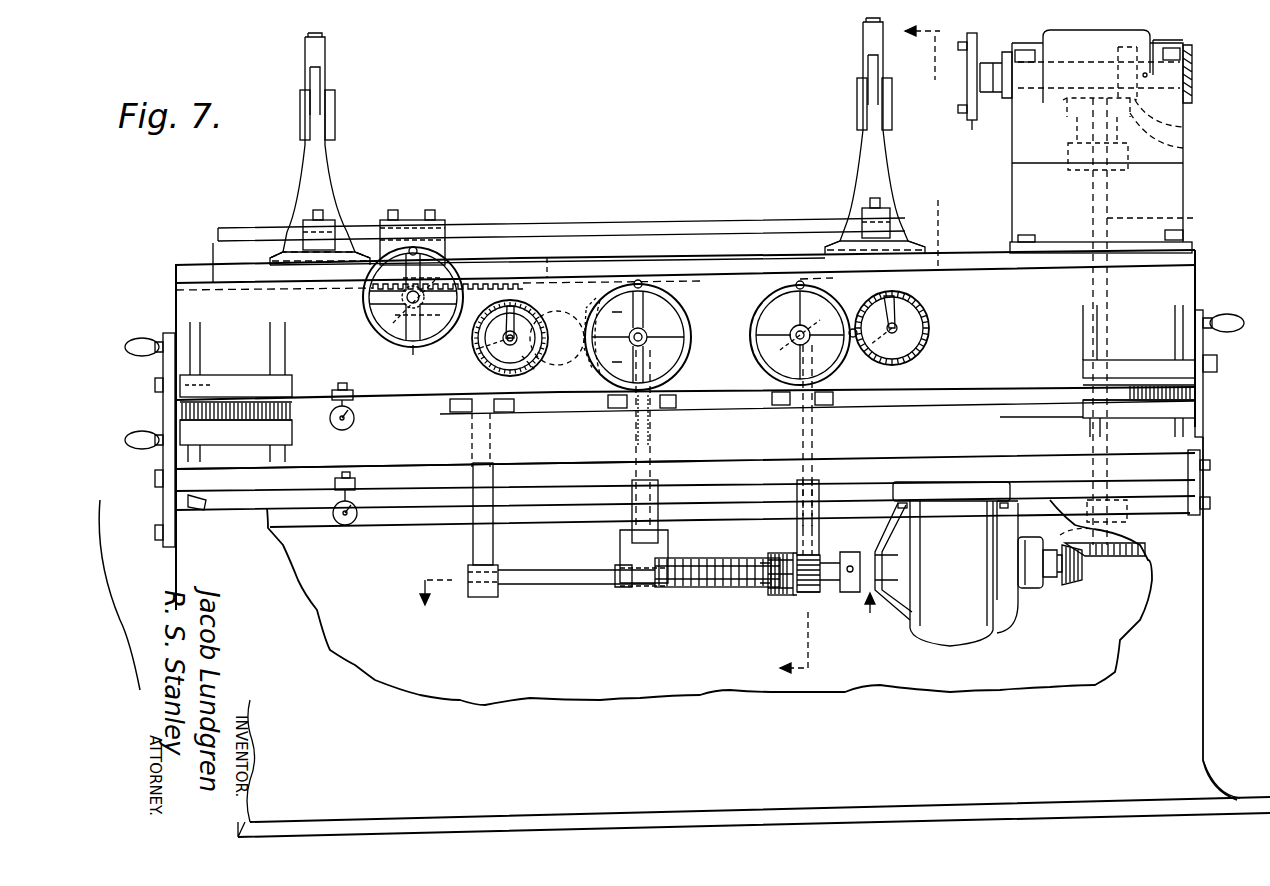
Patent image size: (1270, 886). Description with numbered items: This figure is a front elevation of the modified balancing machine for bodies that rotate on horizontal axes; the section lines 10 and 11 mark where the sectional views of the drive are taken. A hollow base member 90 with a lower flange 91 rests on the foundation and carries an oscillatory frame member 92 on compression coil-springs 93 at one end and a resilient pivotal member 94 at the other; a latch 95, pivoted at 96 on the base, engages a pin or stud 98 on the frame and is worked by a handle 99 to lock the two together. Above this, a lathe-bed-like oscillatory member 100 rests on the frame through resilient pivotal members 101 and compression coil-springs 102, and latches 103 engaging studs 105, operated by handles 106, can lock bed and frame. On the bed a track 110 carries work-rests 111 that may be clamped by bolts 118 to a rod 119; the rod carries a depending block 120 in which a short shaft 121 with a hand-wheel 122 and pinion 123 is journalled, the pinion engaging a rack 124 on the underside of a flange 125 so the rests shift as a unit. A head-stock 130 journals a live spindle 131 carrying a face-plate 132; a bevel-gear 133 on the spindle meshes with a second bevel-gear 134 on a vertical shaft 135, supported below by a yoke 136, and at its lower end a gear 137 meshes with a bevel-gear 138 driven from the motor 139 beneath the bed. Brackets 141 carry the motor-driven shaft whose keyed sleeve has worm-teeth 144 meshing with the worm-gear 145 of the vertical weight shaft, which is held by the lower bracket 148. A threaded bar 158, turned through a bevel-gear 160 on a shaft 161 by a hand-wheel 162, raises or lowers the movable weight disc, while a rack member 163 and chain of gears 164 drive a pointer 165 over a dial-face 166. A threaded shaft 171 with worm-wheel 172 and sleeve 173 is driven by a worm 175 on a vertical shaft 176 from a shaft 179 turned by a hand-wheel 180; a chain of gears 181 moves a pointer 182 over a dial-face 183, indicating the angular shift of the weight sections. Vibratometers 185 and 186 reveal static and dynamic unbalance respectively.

The section line 10— 10 is at (863, 346).
The section line 11— 11 is at (638, 594).
The base member 90 is at (1200, 676).
The lower flange 91 is at (1200, 812).
The oscillatory frame member 92 is at (438, 452).
The compression coil-springs 93 is at (206, 505).
The resilient pivotal member 94 is at (1210, 480).
The latch 95 is at (170, 507).
The pivot of latch 96 is at (155, 535).
The pin or stud 98 is at (155, 481).
The handle 99 is at (150, 443).
The oscillatory bed member 100 is at (685, 405).
The resilient pivotal members 101 is at (292, 410).
The compression coil-springs 102 is at (230, 410).
The latches 103 is at (164, 406).
The pin or stud 105 is at (155, 378).
The handles 106 is at (145, 338).
The track 110 is at (652, 257).
The work-rests 111 is at (322, 170).
The bolts 118 is at (326, 213).
The rod 119 is at (535, 227).
The depending block 120 is at (412, 220).
The short shaft 121 is at (405, 292).
The hand-wheel 122 is at (415, 329).
The pinion 123 is at (388, 334).
The rack 124 is at (516, 291).
The horizontally extending flange 125 is at (193, 262).
The head-stock 130 is at (1175, 191).
The live spindle 131 is at (1186, 82).
The face-plate 132 is at (972, 130).
The bevel-gear 133 is at (1180, 126).
The second bevel-gear 134 is at (1182, 151).
The vertically extending shaft 135 is at (1185, 221).
The yoke 136 is at (1085, 445).
The bevel gear 137 is at (1104, 556).
The bevel-gear 138 is at (1076, 580).
The motor 139 is at (968, 564).
The brackets 141 is at (475, 538).
The worm-teeth 144 is at (696, 590).
The worm-gear 145 is at (780, 595).
The lower bracket 148 is at (632, 493).
The threaded bar 158 is at (638, 432).
The bevel-gear 160 is at (660, 310).
The shaft 161 is at (648, 338).
The hand-wheel 162 is at (683, 350).
The rack member 163 is at (604, 300).
The chain of gears 164 is at (540, 362).
The pointer 165 is at (493, 352).
The dial-face 166 is at (501, 353).
The threaded shaft 171 is at (660, 584).
The worm-wheel 172 is at (818, 595).
The sleeve 173 is at (762, 590).
The worm 175 is at (806, 594).
The vertically extending shaft 176 is at (812, 440).
The shaft 179 is at (790, 340).
The hand-wheel 180 is at (766, 298).
The chain of gears 181 is at (845, 363).
The pointer 182 is at (906, 310).
The dial-face 183 is at (926, 340).
The vibratometer 185 is at (355, 421).
The vibratometer 186 is at (357, 522).